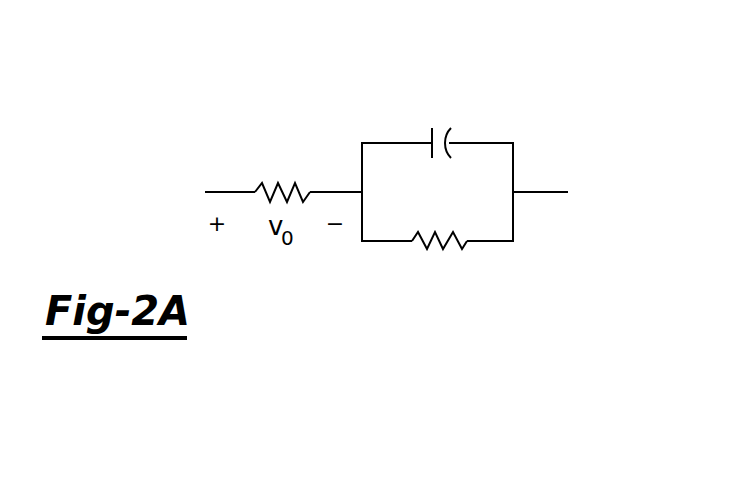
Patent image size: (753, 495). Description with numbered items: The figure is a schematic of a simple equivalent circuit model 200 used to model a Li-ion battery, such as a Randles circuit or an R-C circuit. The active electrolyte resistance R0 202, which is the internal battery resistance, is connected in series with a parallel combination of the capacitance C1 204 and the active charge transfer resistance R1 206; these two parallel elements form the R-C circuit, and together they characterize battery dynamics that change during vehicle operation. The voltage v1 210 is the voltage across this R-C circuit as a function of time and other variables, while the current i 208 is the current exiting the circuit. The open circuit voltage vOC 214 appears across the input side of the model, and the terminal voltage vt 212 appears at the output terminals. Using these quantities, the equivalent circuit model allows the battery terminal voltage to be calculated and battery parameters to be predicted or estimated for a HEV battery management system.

The simple equivalent circuit model 200 is at (216, 63).
The active electrolyte resistance R0 202 is at (287, 128).
The parallel capacitance C1 204 is at (445, 80).
The active charge transfer resistance R1 206 is at (451, 290).
The current i 208 is at (552, 167).
The voltage v1 210 is at (436, 355).
The terminal voltage vt 212 is at (596, 247).
The open circuit voltage vOC 214 is at (264, 355).